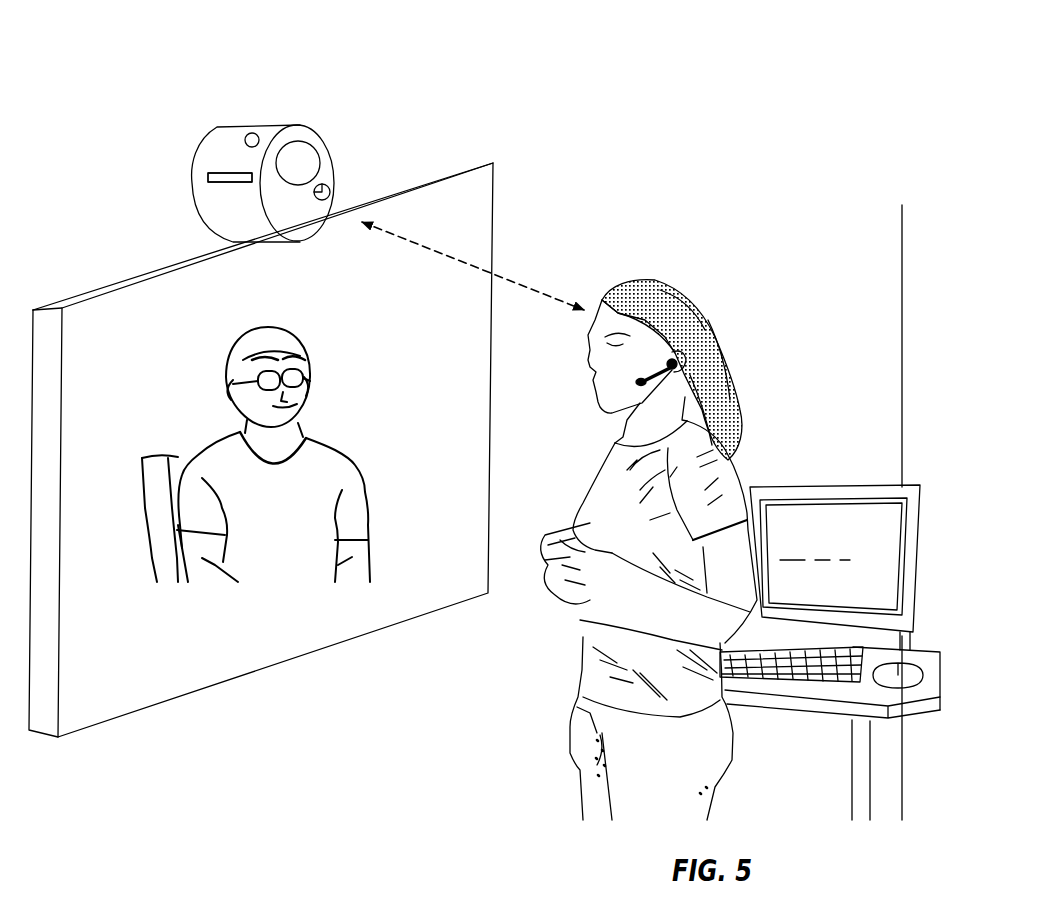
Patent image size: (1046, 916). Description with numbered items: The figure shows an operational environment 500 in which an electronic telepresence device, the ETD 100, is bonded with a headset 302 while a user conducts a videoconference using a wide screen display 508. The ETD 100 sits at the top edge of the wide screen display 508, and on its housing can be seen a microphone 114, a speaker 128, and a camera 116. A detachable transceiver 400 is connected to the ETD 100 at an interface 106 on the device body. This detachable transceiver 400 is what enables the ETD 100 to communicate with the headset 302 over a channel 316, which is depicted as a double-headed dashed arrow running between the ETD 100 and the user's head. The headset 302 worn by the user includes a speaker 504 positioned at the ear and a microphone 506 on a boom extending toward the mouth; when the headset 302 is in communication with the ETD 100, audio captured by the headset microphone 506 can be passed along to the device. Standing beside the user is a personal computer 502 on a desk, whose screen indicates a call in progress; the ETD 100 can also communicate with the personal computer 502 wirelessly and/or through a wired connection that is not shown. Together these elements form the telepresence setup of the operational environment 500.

The operational environment 500 is at (536, 62).
The ETD 100 is at (233, 154).
The interface 106 is at (168, 150).
The detachable transceiver 400 is at (230, 177).
The microphone 114 is at (345, 192).
The camera 116 is at (333, 146).
The speaker 128 is at (251, 122).
The channel 316 is at (518, 259).
The headset 302 is at (661, 538).
The speaker 504 is at (689, 368).
The microphone 506 is at (637, 392).
The personal computer 502 is at (813, 461).
The wide screen display 508 is at (118, 737).